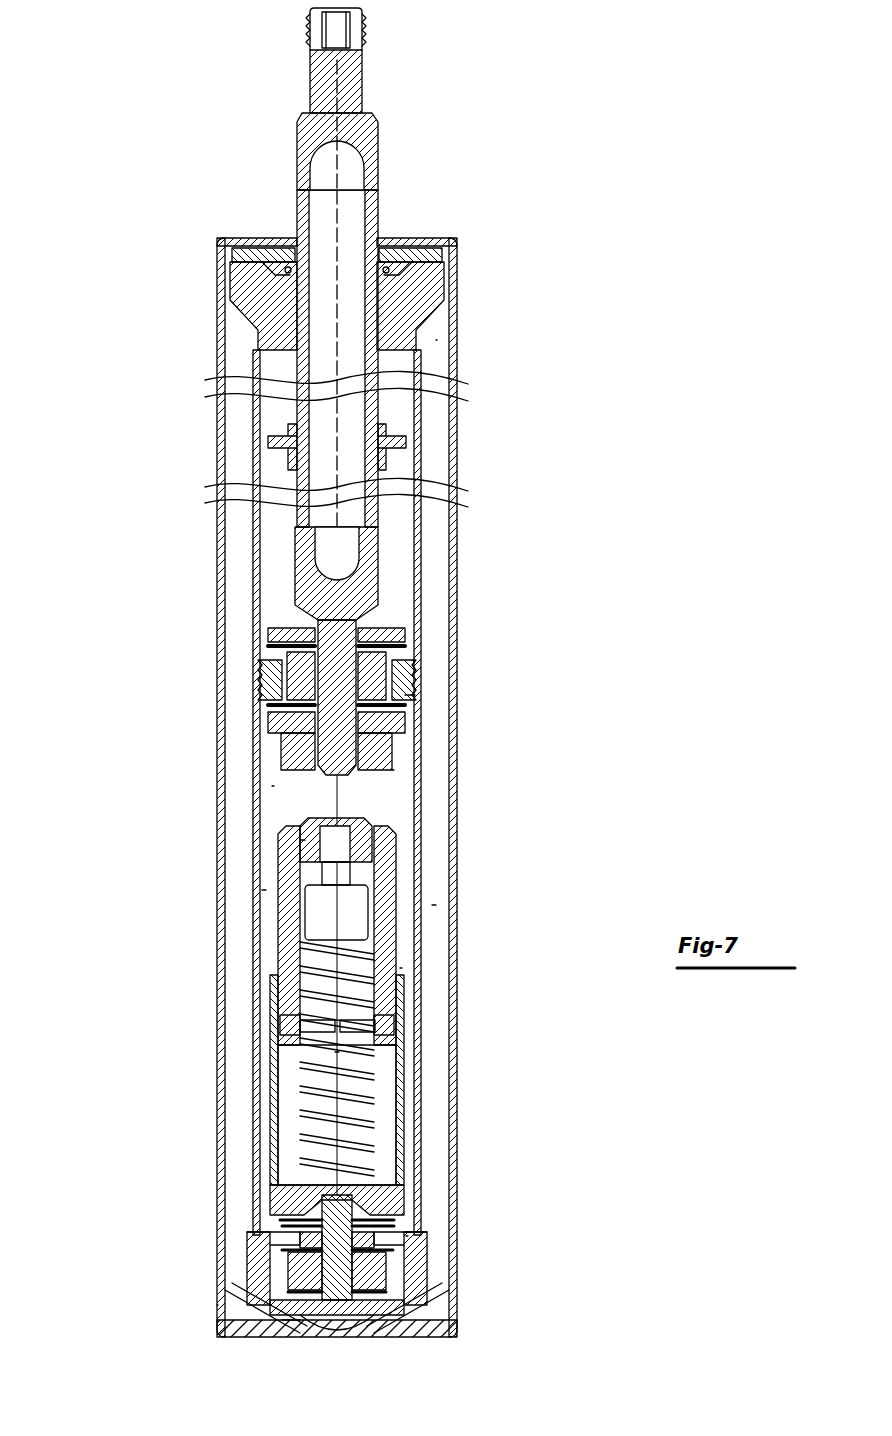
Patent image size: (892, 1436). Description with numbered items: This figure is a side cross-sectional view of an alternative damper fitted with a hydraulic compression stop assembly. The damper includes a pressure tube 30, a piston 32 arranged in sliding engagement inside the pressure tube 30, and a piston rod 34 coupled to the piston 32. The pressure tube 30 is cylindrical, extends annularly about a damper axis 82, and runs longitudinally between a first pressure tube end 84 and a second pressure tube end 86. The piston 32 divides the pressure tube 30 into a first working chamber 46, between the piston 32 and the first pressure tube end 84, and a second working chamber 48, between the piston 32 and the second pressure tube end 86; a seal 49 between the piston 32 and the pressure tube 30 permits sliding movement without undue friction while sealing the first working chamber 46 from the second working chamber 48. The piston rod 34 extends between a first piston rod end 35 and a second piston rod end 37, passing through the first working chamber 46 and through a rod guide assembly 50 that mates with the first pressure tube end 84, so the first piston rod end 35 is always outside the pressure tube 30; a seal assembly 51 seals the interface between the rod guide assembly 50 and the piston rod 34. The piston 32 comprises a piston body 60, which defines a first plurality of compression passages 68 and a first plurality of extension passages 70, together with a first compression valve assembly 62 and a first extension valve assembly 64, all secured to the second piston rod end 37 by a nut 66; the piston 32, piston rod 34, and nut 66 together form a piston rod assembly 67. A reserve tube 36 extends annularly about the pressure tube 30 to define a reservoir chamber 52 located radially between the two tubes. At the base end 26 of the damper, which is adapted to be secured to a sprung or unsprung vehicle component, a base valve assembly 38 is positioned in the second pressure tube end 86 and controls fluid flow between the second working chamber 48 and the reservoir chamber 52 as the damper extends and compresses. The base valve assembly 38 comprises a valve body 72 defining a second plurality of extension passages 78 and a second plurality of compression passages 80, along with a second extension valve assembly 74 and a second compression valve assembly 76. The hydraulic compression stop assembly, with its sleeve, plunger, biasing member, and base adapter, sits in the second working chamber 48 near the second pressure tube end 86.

The base end 26 is at (182, 1304).
The pressure tube 30 is at (265, 1015).
The piston 32 is at (396, 770).
The piston rod 34 is at (297, 205).
The first piston rod end 35 is at (308, 30).
The reserve tube 36 is at (222, 520).
The second piston rod end 37 is at (277, 760).
The base valve assembly 38 is at (280, 1246).
The first working chamber 46 is at (304, 818).
The second working chamber 48 is at (265, 870).
The seal 49 is at (420, 700).
The rod guide assembly 50 is at (240, 266).
The seal assembly 51 is at (412, 258).
The reservoir chamber 52 is at (428, 892).
The piston body 60 is at (268, 685).
The first compression valve assembly 62 is at (402, 624).
The first extension valve assembly 64 is at (275, 715).
The nut 66 is at (392, 752).
The piston rod assembly 67 is at (272, 786).
The first plurality of compression passages 68 is at (405, 665).
The first plurality of extension passages 70 is at (258, 670).
The valve body 72 is at (406, 1290).
The second extension valve assembly 74 is at (285, 1250).
The second compression valve assembly 76 is at (270, 1310).
The second plurality of extension passages 78 is at (262, 1268).
The second plurality of compression passages 80 is at (290, 1332).
The damper axis 82 is at (365, 108).
The first pressure tube end 84 is at (436, 338).
The second pressure tube end 86 is at (432, 1216).